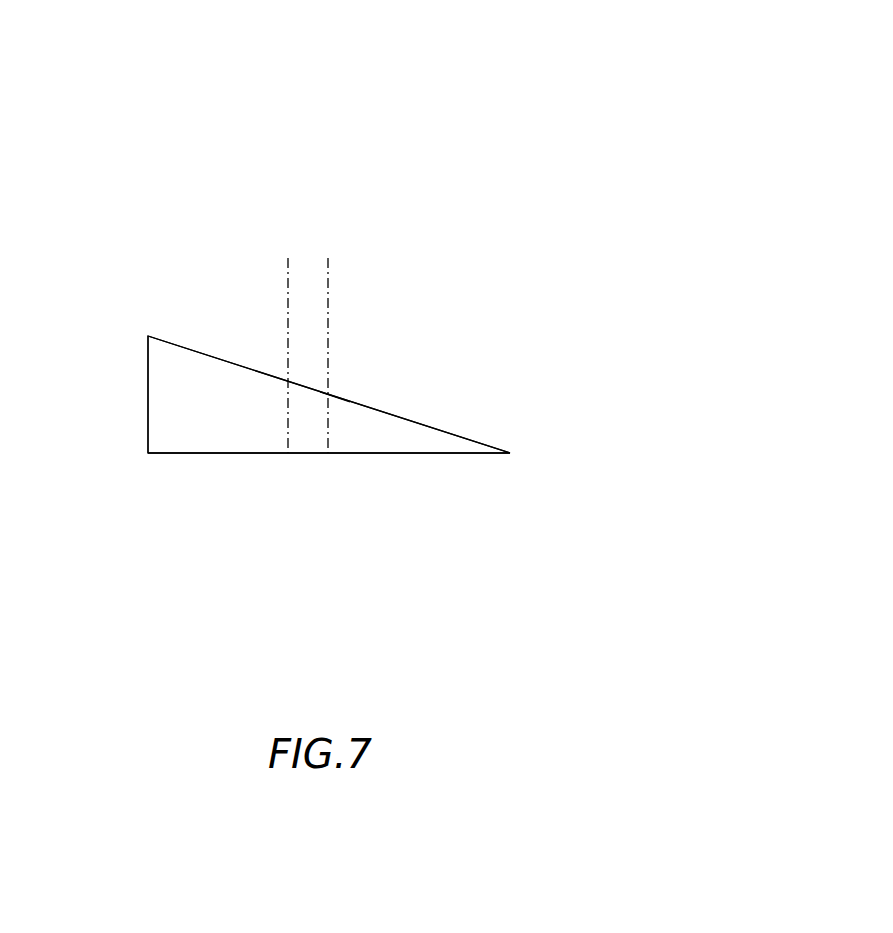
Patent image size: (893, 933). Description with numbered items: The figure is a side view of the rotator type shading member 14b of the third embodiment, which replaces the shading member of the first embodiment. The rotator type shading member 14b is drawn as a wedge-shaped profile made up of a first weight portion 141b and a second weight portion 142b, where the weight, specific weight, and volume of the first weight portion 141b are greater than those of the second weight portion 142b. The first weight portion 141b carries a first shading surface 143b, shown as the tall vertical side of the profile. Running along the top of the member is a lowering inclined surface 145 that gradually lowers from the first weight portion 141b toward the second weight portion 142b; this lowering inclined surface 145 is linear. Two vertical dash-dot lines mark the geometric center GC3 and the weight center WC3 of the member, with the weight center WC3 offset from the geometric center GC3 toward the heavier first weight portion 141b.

The rotator type shading member 14b is at (453, 122).
The first weight portion 141b is at (190, 347).
The second weight portion 142b is at (463, 433).
The first shading surface 143b is at (148, 433).
The lowering inclined surface 145 is at (342, 400).
The weight center WC3 is at (287, 318).
The geometric center GC3 is at (330, 322).